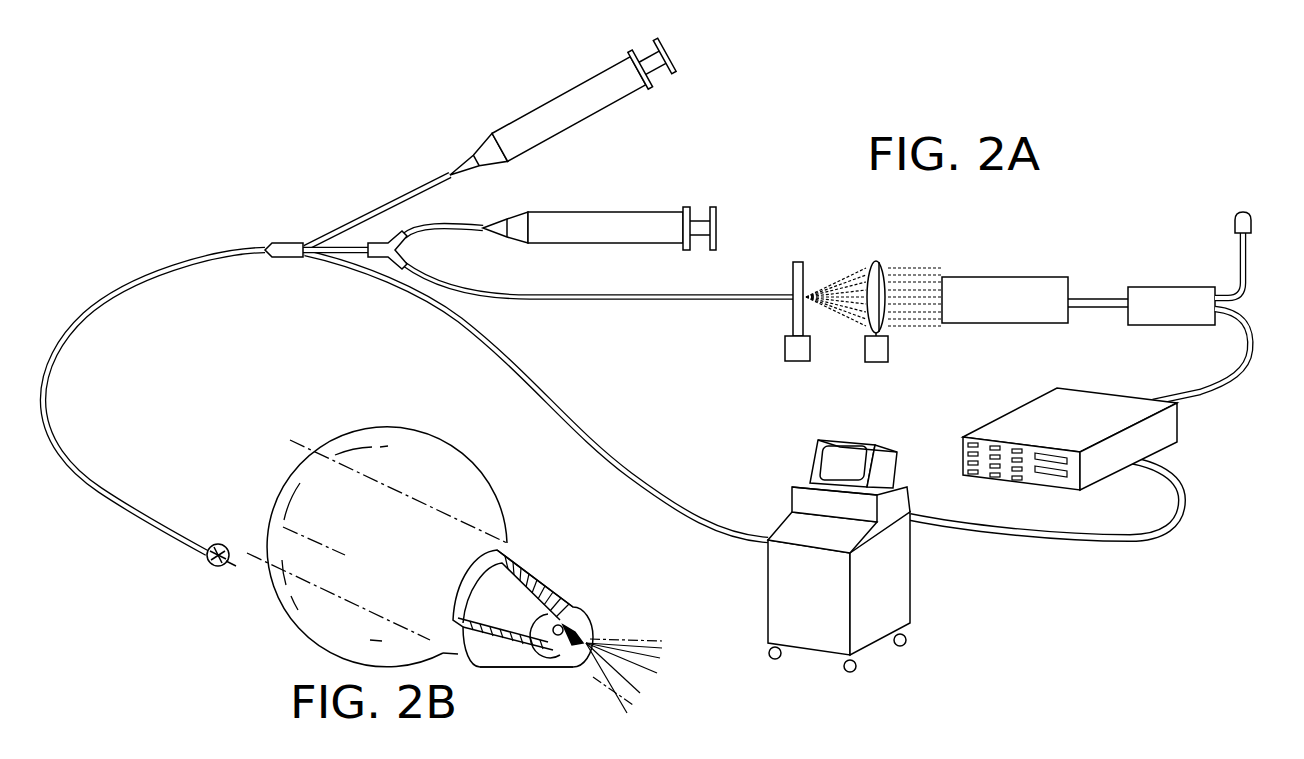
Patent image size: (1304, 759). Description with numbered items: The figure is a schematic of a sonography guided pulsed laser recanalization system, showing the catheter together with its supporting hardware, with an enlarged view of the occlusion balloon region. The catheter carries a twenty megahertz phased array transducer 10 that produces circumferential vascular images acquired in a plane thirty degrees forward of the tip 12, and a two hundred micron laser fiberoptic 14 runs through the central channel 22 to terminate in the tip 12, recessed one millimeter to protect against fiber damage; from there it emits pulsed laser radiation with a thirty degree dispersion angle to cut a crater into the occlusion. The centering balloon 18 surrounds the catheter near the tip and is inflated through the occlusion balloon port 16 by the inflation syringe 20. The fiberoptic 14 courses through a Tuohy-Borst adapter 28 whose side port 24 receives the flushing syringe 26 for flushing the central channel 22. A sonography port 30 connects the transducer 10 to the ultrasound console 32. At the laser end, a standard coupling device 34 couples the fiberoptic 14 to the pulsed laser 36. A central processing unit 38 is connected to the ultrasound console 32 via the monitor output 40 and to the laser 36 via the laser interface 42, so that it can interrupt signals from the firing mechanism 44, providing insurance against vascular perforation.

In FIG. 2B, the phased array transducer 10 is at (486, 593).
In FIG. 2B, the tip 12 is at (550, 670).
In FIG. 2A, the laser fiberoptic 14 is at (637, 302).
In FIG. 2B, the laser fiberoptic 14 is at (566, 626).
In FIG. 2A, the occlusion balloon port 16 is at (369, 206).
In FIG. 2A, the centering balloon 18 is at (224, 543).
In FIG. 2B, the centering balloon 18 is at (321, 499).
In FIG. 2A, the inflation syringe 20 is at (495, 130).
In FIG. 2A, the central channel 22 is at (350, 260).
In FIG. 2A, the side port 24 is at (468, 222).
In FIG. 2A, the flushing syringe 26 is at (610, 210).
In FIG. 2A, the Tuohy-Borst adapter 28 is at (404, 251).
In FIG. 2A, the sonography port 30 is at (615, 458).
In FIG. 2A, the ultrasound console 32 is at (914, 590).
In FIG. 2A, the coupling device 34 is at (867, 258).
In FIG. 2A, the pulsed laser 36 is at (987, 275).
In FIG. 2A, the central processing unit 38 is at (1009, 410).
In FIG. 2A, the monitor output 40 is at (1102, 553).
In FIG. 2A, the laser interface 42 is at (1236, 370).
In FIG. 2A, the firing mechanism 44 is at (1231, 223).